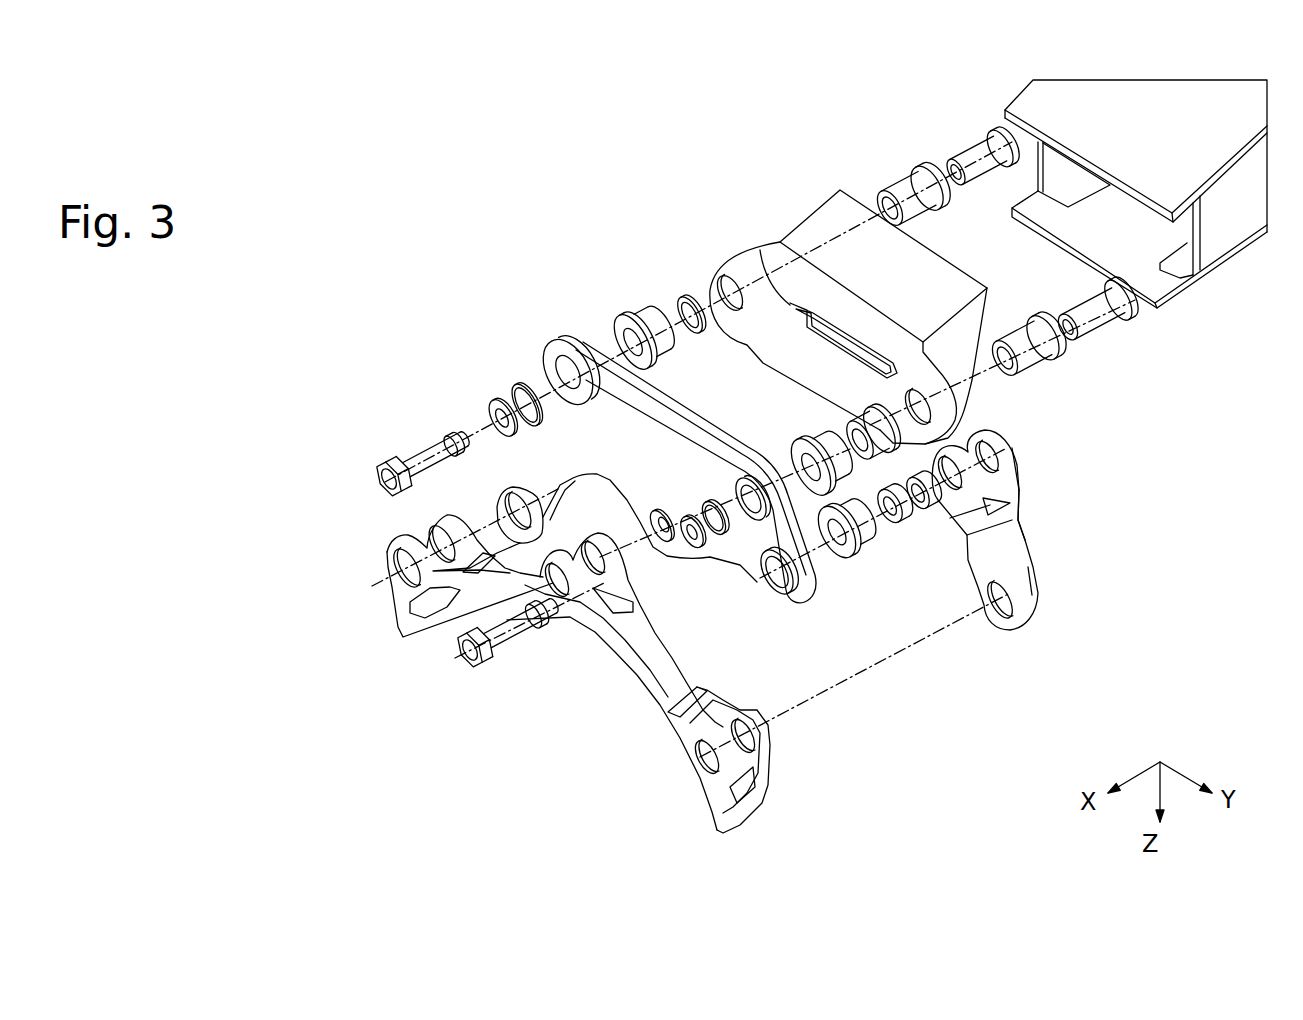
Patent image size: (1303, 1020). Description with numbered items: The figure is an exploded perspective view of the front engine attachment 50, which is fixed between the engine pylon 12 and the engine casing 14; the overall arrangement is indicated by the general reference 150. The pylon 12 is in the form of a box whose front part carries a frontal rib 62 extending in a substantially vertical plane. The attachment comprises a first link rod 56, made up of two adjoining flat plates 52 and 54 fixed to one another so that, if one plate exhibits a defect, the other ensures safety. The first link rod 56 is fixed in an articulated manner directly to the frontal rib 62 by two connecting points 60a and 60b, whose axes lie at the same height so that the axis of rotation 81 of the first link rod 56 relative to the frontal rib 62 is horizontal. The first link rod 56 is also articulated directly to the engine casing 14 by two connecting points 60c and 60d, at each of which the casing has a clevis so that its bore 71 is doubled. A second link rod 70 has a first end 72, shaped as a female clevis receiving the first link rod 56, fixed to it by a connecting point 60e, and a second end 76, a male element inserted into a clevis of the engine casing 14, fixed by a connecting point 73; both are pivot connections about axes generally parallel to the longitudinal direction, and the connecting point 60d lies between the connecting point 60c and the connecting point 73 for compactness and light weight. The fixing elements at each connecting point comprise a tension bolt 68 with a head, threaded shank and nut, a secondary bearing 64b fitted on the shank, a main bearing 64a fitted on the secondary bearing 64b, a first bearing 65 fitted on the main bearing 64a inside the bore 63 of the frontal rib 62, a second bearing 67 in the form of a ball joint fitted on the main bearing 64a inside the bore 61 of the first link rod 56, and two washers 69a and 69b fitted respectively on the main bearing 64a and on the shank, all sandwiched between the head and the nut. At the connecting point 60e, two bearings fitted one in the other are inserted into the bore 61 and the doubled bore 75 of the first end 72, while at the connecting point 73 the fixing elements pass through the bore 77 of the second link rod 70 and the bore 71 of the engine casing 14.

The engine pylon 12 is at (1182, 154).
The engine casing 14 is at (717, 832).
The front engine attachment 50 is at (1170, 375).
The plate 52 is at (667, 478).
The plate 54 is at (588, 338).
The first link rod 56 is at (560, 340).
The connecting point 60a is at (378, 476).
The connecting point 60b is at (463, 670).
The connecting point 60c is at (398, 572).
The connecting point 60d is at (430, 640).
The connecting point 60e is at (747, 587).
The bore 61 is at (517, 392).
The frontal rib 62 is at (908, 292).
The bore 63 is at (718, 288).
The main bearing 64a is at (910, 187).
The secondary bearing 64b is at (973, 150).
The first bearing 65 is at (688, 292).
The second bearing 67 is at (805, 437).
The tension bolt 68 is at (520, 632).
The washer 69a is at (517, 392).
The washer 69b is at (494, 415).
The second link rod 70 is at (1082, 519).
The bore 71 is at (393, 558).
The first end 72 is at (985, 428).
The connecting point 73 is at (846, 688).
The bore 75 is at (993, 463).
The second end 76 is at (1038, 612).
The bore 77 is at (1000, 615).
The axis of rotation 81 is at (478, 320).
The mounting system 150 is at (500, 192).